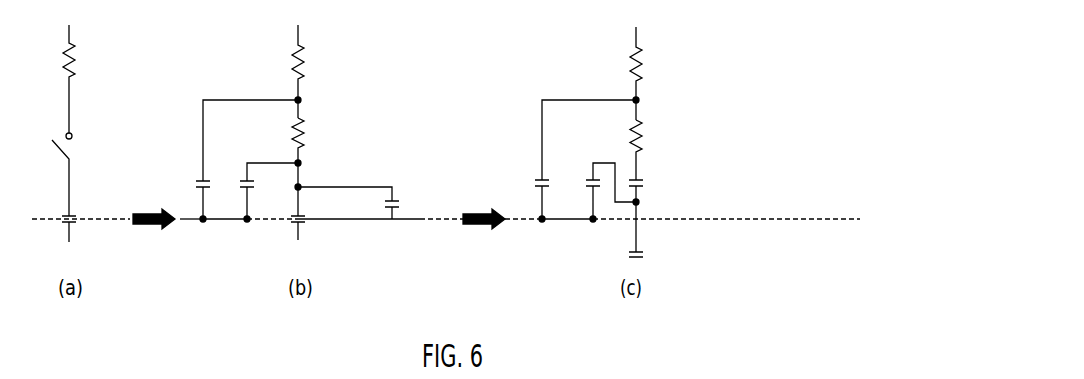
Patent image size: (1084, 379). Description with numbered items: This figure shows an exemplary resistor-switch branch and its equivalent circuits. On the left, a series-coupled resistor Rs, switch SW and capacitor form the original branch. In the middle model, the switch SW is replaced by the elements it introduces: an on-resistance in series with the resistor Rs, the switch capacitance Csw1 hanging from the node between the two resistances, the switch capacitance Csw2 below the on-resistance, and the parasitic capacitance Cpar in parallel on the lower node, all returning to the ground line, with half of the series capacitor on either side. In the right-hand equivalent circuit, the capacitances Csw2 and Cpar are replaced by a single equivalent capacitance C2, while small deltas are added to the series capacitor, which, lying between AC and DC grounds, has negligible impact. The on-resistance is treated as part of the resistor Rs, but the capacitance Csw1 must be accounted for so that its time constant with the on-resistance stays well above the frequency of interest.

The resistor Rs is at (84, 79).
The switch SW is at (78, 174).
The switch capacitance Csw1 is at (224, 161).
The switch capacitance Csw2 is at (269, 192).
The parasitic capacitance Cpar is at (369, 203).
The equivalent capacitance C2 is at (602, 192).